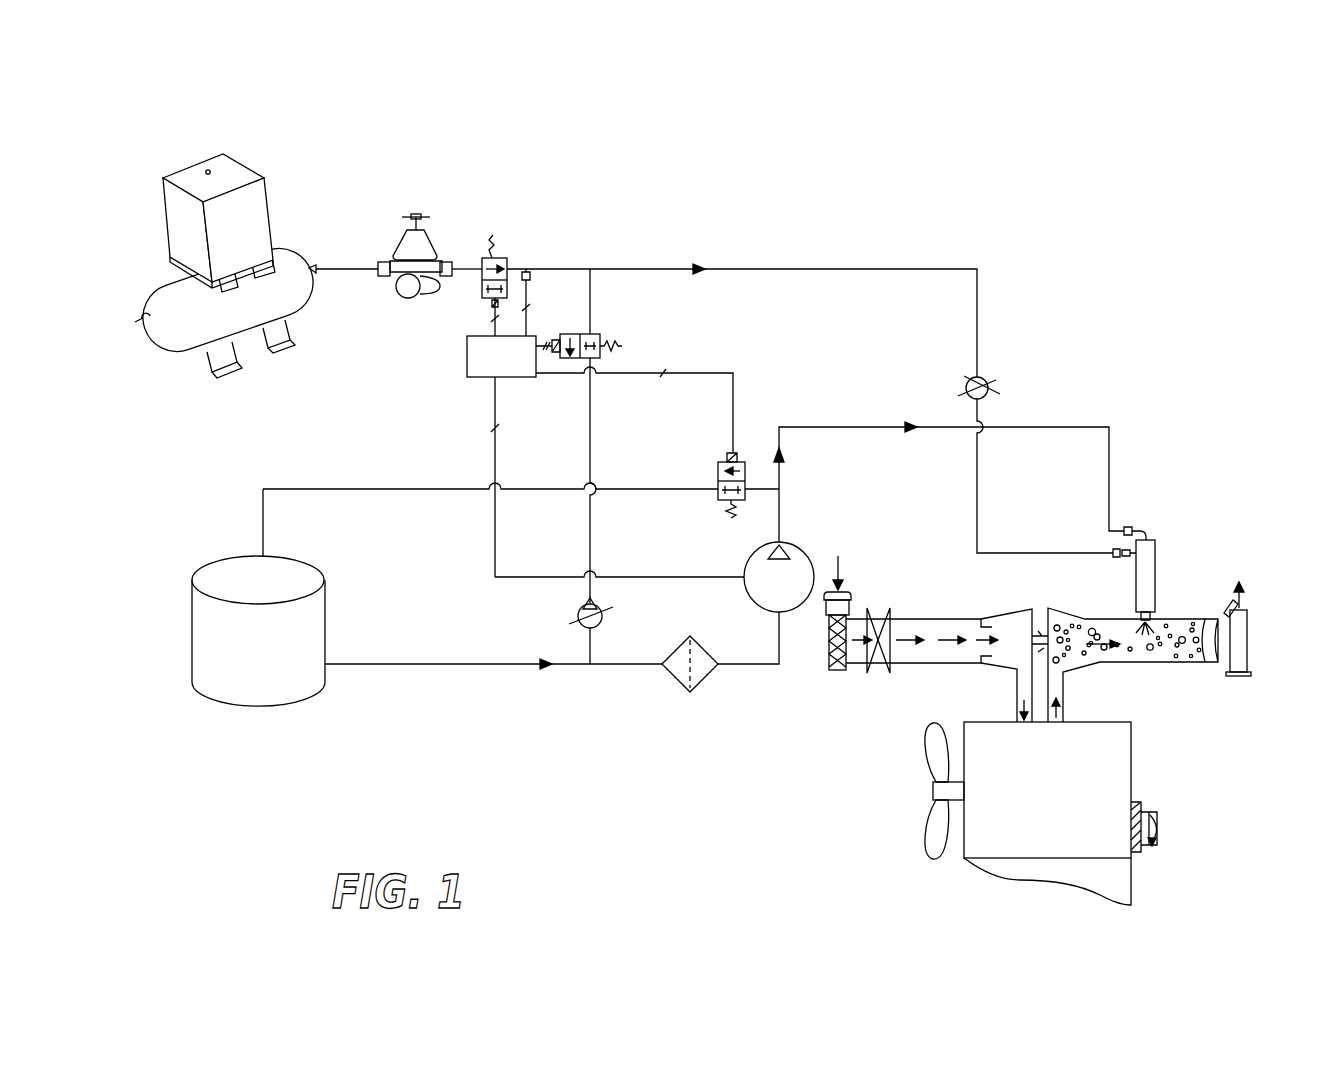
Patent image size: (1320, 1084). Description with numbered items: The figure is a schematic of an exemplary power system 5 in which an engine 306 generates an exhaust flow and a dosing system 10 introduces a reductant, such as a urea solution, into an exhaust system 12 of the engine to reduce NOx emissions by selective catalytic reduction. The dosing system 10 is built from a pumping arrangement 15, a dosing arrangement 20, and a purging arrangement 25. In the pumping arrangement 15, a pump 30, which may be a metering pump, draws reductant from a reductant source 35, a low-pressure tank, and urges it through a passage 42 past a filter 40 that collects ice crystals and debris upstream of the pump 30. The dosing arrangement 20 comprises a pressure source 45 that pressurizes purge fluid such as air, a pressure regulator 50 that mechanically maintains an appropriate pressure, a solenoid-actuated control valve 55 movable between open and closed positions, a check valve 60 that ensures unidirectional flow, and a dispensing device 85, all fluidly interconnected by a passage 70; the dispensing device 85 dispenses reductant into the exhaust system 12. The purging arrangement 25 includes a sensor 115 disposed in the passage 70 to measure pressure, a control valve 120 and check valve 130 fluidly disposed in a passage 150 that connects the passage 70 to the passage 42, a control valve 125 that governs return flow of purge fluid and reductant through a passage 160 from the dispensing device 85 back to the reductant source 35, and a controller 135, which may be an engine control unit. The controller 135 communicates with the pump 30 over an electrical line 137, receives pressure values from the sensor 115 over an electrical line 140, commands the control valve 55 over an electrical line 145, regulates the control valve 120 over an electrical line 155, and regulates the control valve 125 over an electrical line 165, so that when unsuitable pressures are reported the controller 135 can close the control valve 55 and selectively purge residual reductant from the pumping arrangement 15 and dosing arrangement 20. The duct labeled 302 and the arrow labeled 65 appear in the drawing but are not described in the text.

The power system 5 is at (1074, 804).
The dosing system 10 is at (256, 224).
The exhaust system 12 is at (1256, 646).
The pumping arrangement 15 is at (813, 640).
The dosing arrangement 20 is at (1155, 432).
The purging arrangement 25 is at (657, 332).
The pump 30 is at (772, 590).
The reductant source 35 is at (243, 651).
The filter 40 is at (675, 677).
The passage 42 is at (489, 663).
The pressure source 45 is at (228, 318).
The pressure regulator 50 is at (420, 243).
The control valve 55 is at (494, 257).
The check valve 60 is at (980, 375).
The control system 65 is at (1147, 184).
The passage 70 is at (747, 268).
The dispensing device 85 is at (1156, 556).
The sensor 115 is at (532, 278).
The control valve 120 is at (600, 333).
The control valve 125 is at (718, 478).
The check valve 130 is at (603, 606).
The controller 135 is at (518, 364).
The electrical line 137 is at (494, 442).
The electrical line 140 is at (527, 307).
The electrical line 145 is at (490, 312).
The passage 150 is at (592, 407).
The electrical line 155 is at (553, 373).
The passage 160 is at (643, 491).
The electrical line 165 is at (703, 372).
The air duct 302 is at (874, 571).
The engine 306 is at (1028, 801).